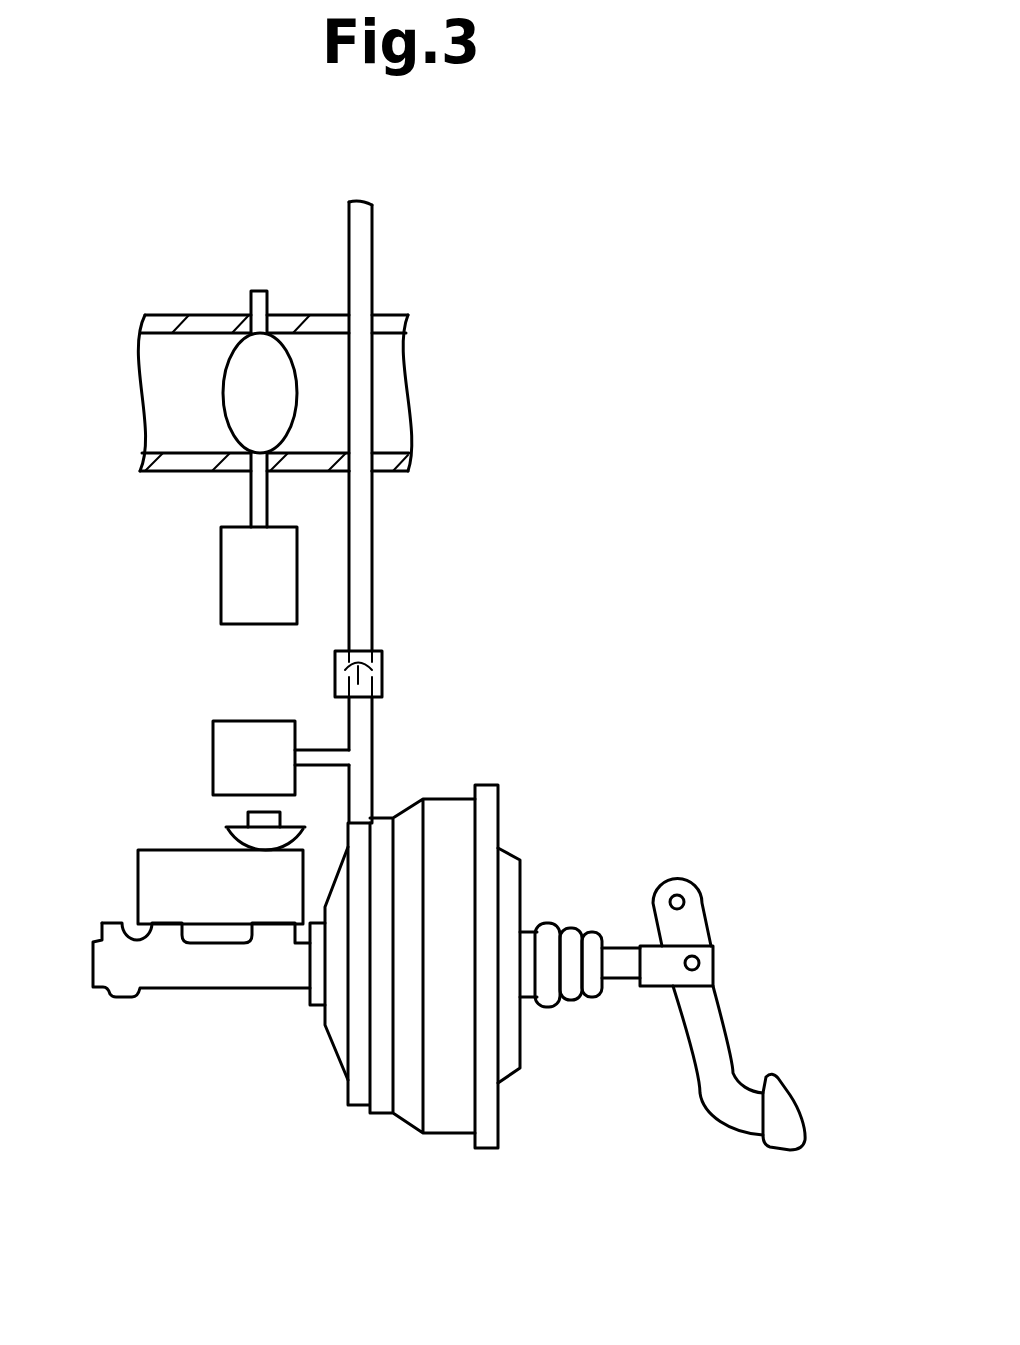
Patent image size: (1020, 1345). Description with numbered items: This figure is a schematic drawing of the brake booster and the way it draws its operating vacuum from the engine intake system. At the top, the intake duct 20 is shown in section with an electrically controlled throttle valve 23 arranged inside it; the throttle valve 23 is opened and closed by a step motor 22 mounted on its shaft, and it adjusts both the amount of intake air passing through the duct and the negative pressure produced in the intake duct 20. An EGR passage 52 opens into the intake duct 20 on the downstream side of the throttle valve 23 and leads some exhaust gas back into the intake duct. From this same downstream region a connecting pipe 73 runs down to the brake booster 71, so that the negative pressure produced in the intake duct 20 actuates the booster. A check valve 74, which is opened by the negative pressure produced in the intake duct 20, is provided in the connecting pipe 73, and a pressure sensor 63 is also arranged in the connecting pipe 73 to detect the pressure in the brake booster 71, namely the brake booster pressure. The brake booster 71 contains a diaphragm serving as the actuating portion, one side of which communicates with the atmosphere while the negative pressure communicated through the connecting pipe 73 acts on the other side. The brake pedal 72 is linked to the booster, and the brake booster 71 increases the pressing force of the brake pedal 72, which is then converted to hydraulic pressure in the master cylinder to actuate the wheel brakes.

The intake duct 20 is at (207, 315).
The throttle valve 23 is at (227, 413).
The step motor 22 is at (221, 578).
The EGR passage 52 is at (372, 257).
The connecting pipe 73 is at (372, 580).
The check valve 74 is at (382, 660).
The pressure sensor 63 is at (213, 750).
The brake booster 71 is at (357, 1197).
The brake pedal 72 is at (790, 1100).